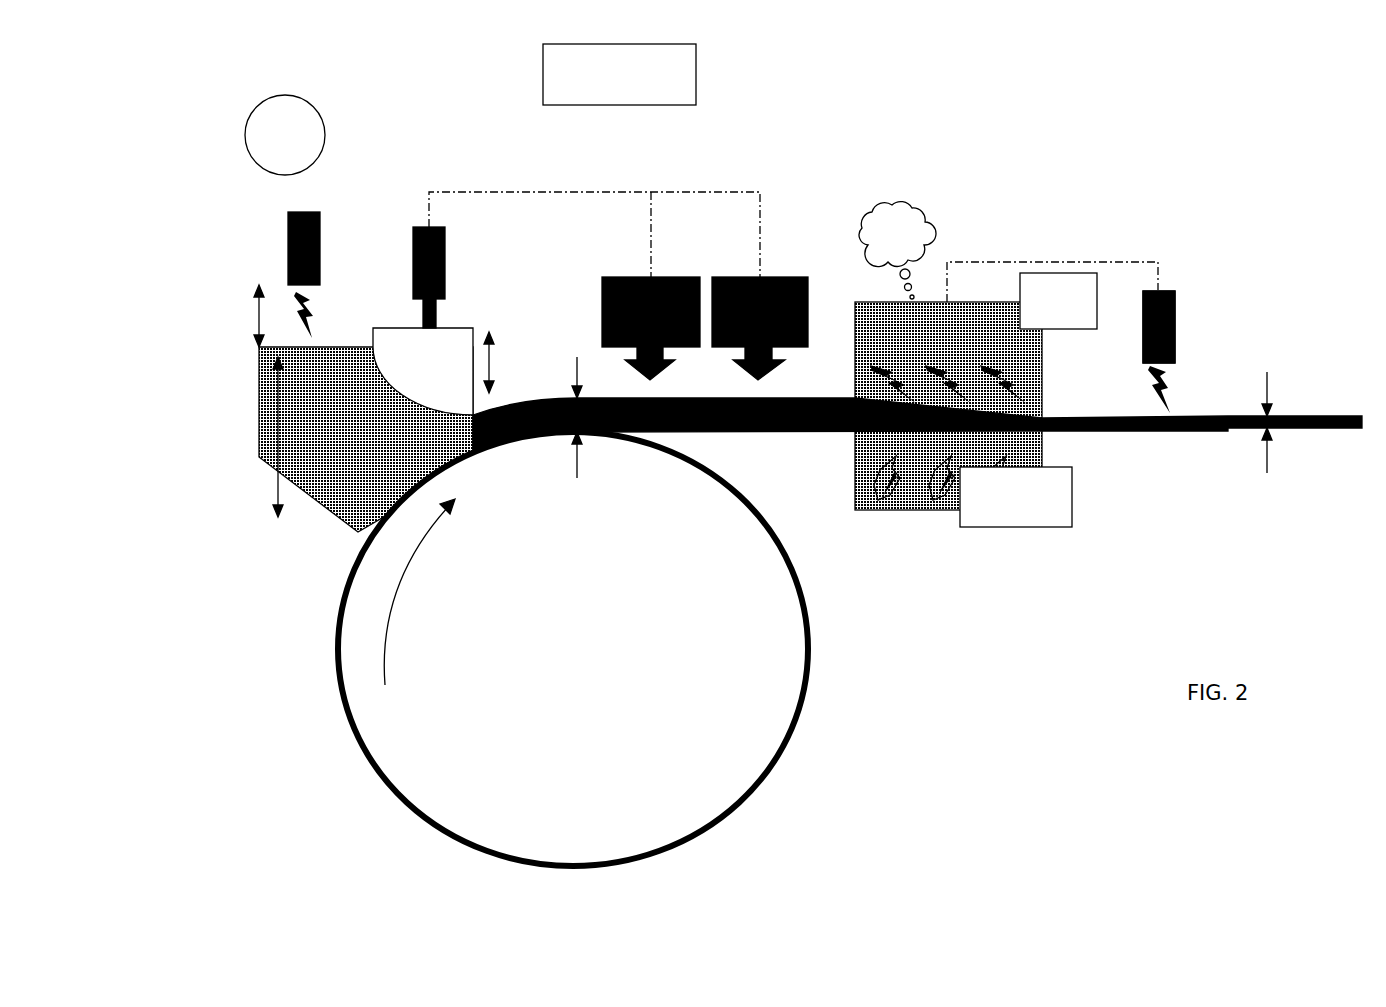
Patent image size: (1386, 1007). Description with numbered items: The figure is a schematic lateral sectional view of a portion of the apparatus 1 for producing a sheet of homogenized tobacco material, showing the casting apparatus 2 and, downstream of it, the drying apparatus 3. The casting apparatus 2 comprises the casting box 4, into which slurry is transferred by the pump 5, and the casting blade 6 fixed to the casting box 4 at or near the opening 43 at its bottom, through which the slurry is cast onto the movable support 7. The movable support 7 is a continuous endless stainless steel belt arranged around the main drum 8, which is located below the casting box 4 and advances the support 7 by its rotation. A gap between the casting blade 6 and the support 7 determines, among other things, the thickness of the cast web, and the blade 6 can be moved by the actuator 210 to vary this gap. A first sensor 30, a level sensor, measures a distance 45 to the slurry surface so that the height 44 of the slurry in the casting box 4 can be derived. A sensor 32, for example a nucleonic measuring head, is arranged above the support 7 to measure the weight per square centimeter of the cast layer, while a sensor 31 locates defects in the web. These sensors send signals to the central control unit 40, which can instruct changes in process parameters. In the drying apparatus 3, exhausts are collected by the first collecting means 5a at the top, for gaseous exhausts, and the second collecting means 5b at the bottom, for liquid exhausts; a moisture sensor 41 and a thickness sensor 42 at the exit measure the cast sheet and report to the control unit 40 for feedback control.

The apparatus 1 is at (875, 826).
The casting apparatus 2 is at (360, 163).
The drying apparatus 3 is at (972, 214).
The casting box 4 is at (272, 384).
The pump 5 is at (278, 121).
The first collecting means 5a is at (1030, 287).
The second collecting means 5b is at (988, 527).
The casting blade 6 is at (455, 352).
The movable support 7 is at (1100, 432).
The main drum 8 is at (356, 669).
The first sensor 30 is at (288, 218).
The sensor 31 is at (805, 277).
The sensor 32 is at (598, 283).
The central control unit 40 is at (670, 80).
The moisture sensor 41 is at (1175, 310).
The thickness sensor 42 is at (1175, 310).
The opening 43 is at (520, 405).
The height 44 is at (265, 428).
The distance 45 is at (259, 310).
The actuator 210 is at (445, 255).